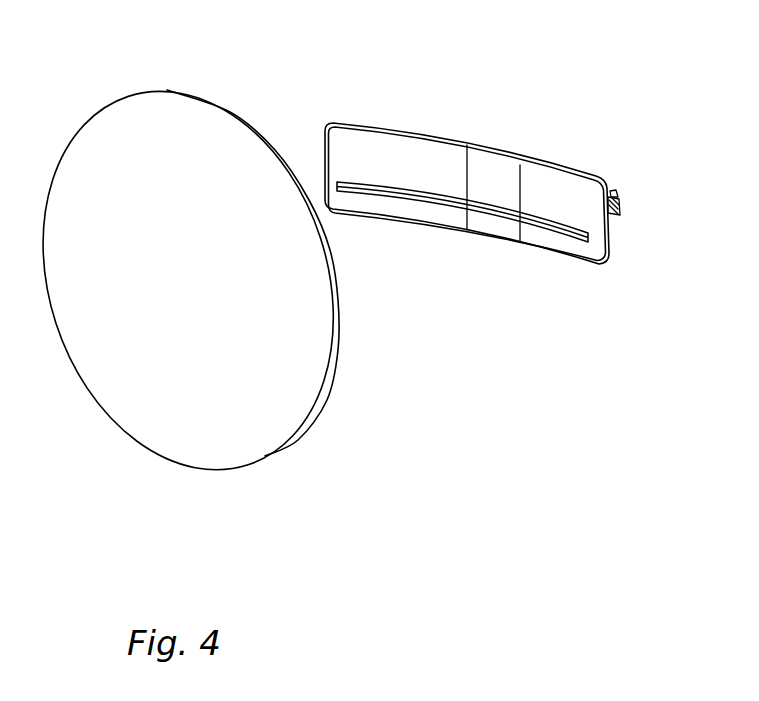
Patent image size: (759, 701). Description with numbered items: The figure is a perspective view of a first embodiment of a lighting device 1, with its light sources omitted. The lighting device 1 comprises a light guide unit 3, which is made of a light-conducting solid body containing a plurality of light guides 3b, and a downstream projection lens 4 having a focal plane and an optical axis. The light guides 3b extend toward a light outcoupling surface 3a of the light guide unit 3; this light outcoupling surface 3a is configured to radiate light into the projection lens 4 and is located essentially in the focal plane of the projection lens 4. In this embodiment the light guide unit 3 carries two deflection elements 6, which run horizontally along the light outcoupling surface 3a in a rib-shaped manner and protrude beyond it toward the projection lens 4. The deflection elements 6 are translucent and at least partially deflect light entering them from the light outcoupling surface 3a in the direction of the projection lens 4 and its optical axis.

The lighting device 1 is at (340, 65).
The light guide unit 3 is at (504, 102).
The light outcoupling surface 3a is at (423, 158).
The light guides 3b is at (616, 210).
The projection lens 4 is at (230, 435).
The deflection elements 6 is at (585, 243).